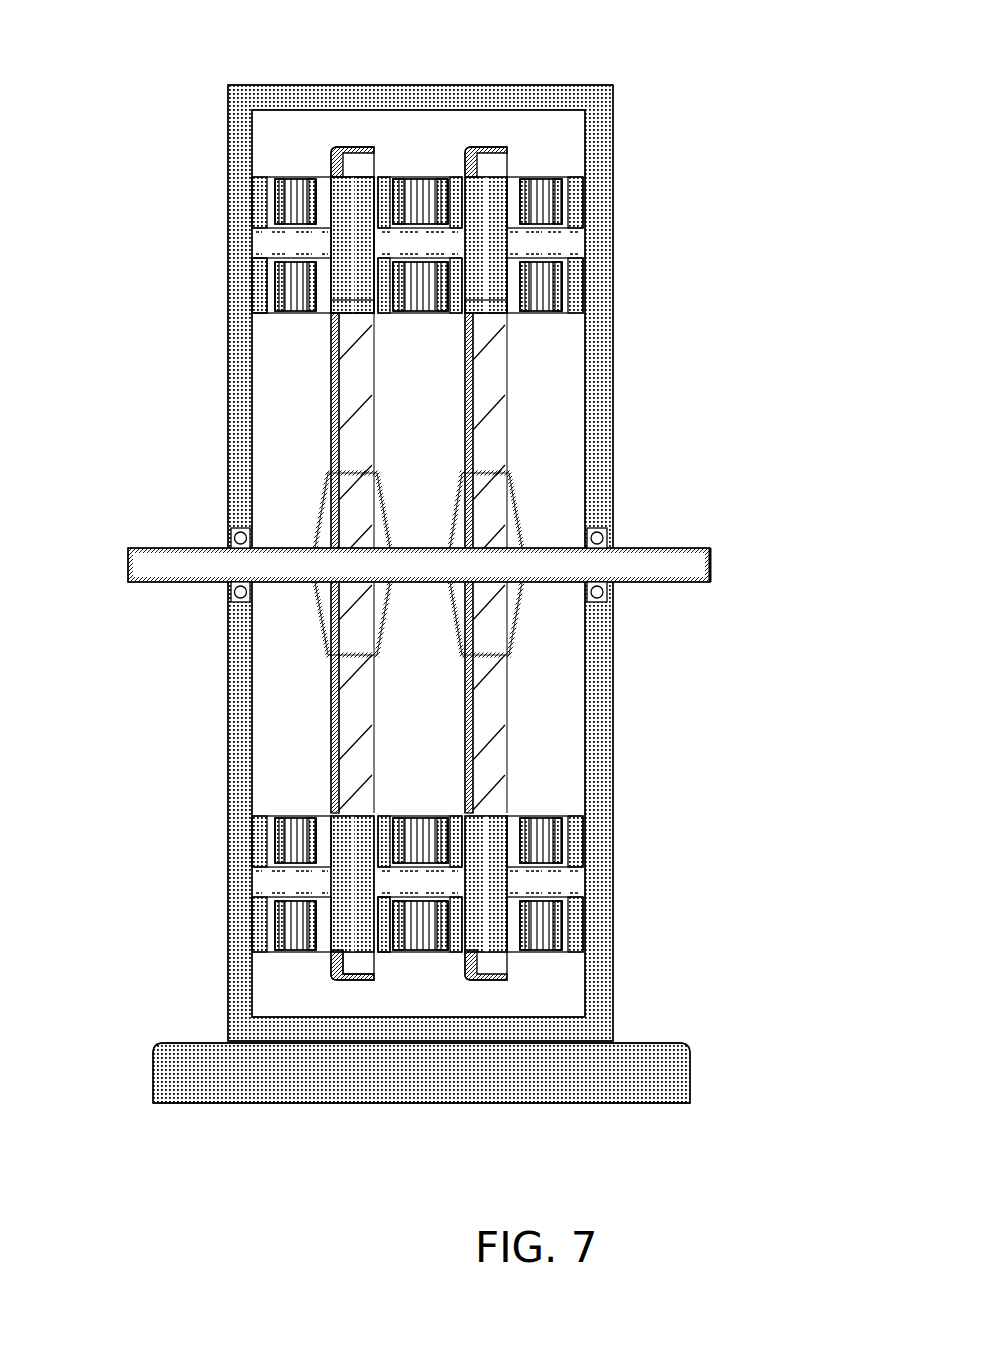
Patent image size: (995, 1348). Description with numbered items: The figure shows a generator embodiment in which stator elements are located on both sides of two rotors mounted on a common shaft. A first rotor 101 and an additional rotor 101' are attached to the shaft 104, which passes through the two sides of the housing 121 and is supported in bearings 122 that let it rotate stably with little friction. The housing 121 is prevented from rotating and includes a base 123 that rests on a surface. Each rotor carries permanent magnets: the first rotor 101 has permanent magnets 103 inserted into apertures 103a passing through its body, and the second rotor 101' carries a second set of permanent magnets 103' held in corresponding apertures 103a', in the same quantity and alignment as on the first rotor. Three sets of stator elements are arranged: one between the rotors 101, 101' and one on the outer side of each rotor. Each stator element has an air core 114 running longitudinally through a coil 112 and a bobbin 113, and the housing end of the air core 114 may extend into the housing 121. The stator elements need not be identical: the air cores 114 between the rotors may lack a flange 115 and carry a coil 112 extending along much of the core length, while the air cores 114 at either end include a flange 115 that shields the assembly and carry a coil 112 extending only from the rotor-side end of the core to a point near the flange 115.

The rotor 101 is at (370, 492).
The additional rotor 101' is at (507, 490).
The permanent magnet 103 is at (313, 165).
The second set of permanent magnets 103' is at (452, 841).
The aperture 103a is at (262, 372).
The aperture of the second rotor 103a' is at (588, 380).
The shaft 104 is at (712, 546).
The coil 112 is at (430, 191).
The bobbin 113 is at (260, 280).
The air core 114 is at (599, 238).
The flange 115 is at (250, 205).
The housing 121 is at (617, 920).
The bearing 122 is at (230, 599).
The base 123 is at (258, 1078).